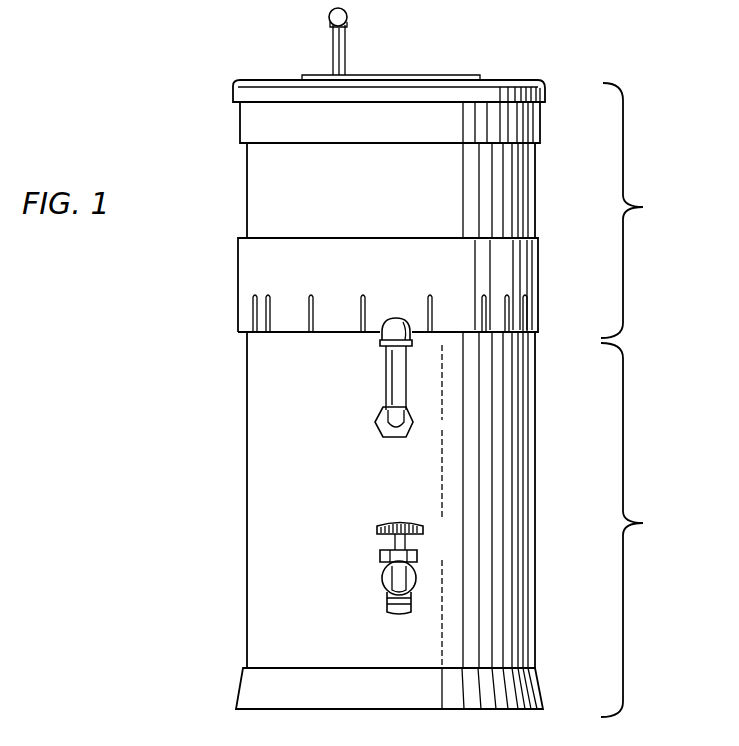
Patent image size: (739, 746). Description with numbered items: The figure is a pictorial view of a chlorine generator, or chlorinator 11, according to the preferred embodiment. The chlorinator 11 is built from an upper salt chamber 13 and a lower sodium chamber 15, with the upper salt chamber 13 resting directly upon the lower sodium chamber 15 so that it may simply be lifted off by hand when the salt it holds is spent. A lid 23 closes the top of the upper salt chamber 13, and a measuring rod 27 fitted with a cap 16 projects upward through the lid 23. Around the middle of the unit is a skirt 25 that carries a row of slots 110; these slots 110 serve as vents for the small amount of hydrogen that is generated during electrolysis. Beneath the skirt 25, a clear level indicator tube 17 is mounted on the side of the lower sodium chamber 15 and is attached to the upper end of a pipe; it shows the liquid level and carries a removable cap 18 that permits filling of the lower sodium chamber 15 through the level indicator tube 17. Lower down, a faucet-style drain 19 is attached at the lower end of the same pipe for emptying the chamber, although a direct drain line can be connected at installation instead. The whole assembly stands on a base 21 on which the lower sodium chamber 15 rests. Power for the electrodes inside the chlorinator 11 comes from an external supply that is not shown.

The chlorine generator 11 is at (545, 70).
The upper salt chamber 13 is at (643, 210).
The lower sodium chamber 15 is at (639, 530).
The cap 16 is at (348, 20).
The clear level indicator tube 17 is at (387, 383).
The removable cap 18 is at (388, 340).
The drain 19 is at (380, 570).
The base 21 is at (240, 690).
The lid 23 is at (474, 77).
The skirt 25 is at (238, 277).
The measuring rod 27 is at (332, 48).
The slots 110 is at (430, 293).